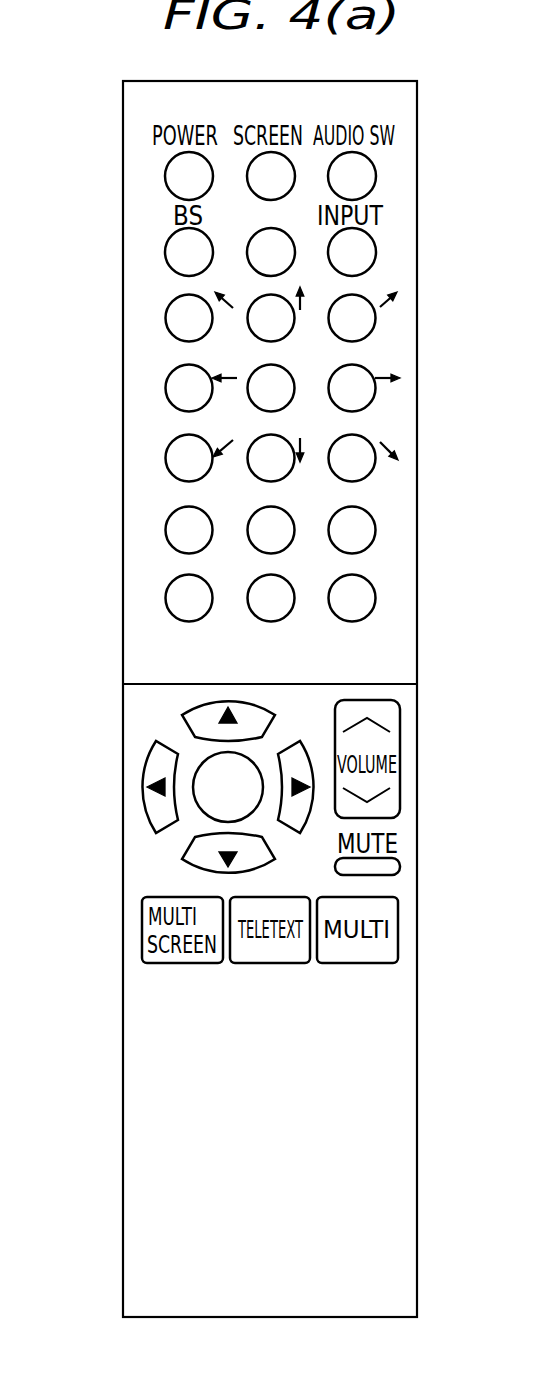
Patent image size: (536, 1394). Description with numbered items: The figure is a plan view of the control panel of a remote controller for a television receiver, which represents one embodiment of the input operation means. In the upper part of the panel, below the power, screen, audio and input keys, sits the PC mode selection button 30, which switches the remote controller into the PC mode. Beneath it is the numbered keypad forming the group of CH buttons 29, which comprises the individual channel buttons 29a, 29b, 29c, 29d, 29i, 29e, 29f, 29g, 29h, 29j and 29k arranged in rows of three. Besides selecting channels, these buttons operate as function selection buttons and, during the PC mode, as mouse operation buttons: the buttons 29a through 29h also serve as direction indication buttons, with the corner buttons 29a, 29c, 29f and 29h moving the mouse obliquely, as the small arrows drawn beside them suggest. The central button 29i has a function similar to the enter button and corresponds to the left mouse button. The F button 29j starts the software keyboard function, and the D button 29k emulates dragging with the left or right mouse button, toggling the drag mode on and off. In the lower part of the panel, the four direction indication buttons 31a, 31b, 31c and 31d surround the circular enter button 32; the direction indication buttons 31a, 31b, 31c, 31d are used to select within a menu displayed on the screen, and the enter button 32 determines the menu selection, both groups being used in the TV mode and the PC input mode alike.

The CH buttons 29 is at (438, 608).
The CH button 29a is at (172, 335).
The CH button 29b is at (254, 335).
The CH button 29c is at (335, 335).
The CH button 29d is at (172, 405).
The CH button 29i is at (254, 405).
The CH button 29e is at (335, 405).
The CH button 29f is at (172, 475).
The CH button 29g is at (254, 475).
The CH button 29h is at (335, 475).
The F button 29j is at (172, 547).
The D button 29k is at (254, 547).
The PC mode selection button 30 is at (248, 262).
The direction indication button 31a is at (262, 713).
The direction indication button 31b is at (198, 867).
The direction indication button 31c is at (155, 742).
The direction indication button 31d is at (290, 830).
The enter button 32 is at (213, 800).